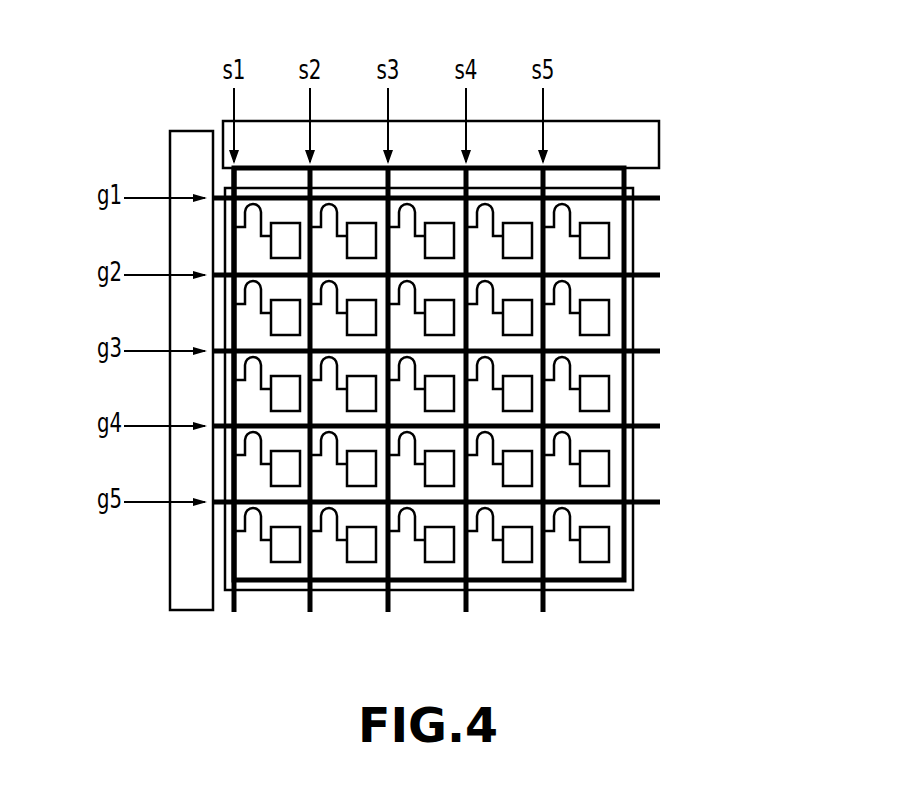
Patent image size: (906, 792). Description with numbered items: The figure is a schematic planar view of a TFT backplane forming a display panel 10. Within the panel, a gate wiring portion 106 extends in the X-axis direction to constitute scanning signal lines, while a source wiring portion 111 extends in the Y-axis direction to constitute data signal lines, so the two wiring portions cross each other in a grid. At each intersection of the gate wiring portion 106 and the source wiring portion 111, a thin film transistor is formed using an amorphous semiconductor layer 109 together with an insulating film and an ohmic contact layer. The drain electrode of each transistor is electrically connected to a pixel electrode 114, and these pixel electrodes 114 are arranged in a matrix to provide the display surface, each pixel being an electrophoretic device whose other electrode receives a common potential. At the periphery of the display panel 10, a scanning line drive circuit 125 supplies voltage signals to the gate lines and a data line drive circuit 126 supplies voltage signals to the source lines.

The display panel 10 is at (647, 537).
The gate wiring portion 106 is at (633, 423).
The amorphous semiconductor layer 109 is at (567, 282).
The source wiring portion 111 is at (626, 178).
The pixel electrode 114 is at (600, 320).
The scanning line drive circuit 125 is at (185, 568).
The data line drive circuit 126 is at (608, 132).